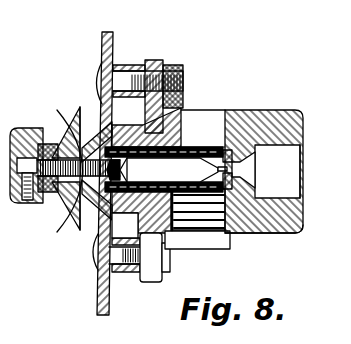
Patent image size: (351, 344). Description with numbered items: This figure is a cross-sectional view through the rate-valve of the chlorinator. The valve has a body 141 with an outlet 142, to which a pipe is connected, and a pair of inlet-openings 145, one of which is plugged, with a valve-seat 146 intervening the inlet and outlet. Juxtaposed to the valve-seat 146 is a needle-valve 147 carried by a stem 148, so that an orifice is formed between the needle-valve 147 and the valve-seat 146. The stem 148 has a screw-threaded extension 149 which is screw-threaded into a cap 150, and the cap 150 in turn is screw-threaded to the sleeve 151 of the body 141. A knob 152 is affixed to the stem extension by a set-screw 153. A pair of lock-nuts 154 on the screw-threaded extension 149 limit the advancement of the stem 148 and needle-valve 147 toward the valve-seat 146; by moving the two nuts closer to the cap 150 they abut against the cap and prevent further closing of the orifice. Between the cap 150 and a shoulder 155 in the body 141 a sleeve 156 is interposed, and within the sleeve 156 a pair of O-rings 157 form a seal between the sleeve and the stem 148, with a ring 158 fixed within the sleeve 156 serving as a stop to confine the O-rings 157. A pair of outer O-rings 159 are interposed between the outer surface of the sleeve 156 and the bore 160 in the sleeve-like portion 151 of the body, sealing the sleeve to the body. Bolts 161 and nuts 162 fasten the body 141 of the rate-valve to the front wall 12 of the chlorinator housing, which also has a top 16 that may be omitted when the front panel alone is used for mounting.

The front wall 12 is at (129, 167).
The top 16 is at (110, 33).
The body 141 is at (262, 215).
The outlet 142 is at (292, 158).
The inlet-openings 145 is at (204, 116).
The valve-seat 146 is at (264, 110).
The needle-valve 147 is at (204, 190).
The stem 148 is at (167, 170).
The screw-threaded extension 149 is at (60, 207).
The cap 150 is at (88, 205).
The sleeve 151 is at (176, 112).
The knob 152 is at (28, 127).
The set-screw 153 is at (27, 205).
The lock-nuts 154 is at (57, 135).
The shoulder 155 is at (247, 161).
The sleeve 156 is at (259, 110).
The O-rings 157 is at (187, 148).
The ring 158 is at (226, 140).
The outer O-rings 159 is at (126, 225).
The bore 160 is at (126, 122).
The bolts 161 is at (184, 82).
The nuts 162 is at (172, 64).